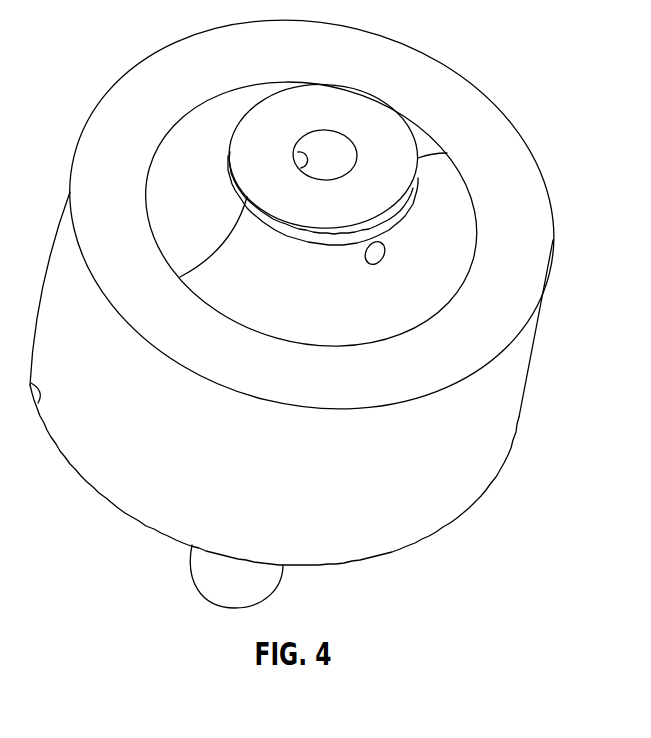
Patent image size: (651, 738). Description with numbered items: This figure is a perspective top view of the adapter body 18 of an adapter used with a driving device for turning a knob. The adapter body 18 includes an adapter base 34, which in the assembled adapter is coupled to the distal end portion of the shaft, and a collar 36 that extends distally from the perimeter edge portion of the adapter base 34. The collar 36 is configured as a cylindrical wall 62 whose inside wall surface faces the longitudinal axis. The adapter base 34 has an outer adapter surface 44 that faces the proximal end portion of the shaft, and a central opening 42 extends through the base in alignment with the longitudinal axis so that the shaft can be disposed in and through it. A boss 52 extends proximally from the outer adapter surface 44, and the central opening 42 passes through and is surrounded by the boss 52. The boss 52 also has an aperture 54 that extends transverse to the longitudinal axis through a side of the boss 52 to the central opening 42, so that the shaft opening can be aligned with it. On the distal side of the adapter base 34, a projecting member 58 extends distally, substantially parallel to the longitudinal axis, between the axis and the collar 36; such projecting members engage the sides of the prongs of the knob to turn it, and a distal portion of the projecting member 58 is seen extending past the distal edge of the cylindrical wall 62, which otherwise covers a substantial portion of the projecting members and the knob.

The adapter body 18 is at (542, 298).
The adapter base 34 is at (520, 187).
The collar 36 is at (500, 377).
The central opening 42 is at (333, 132).
The outer adapter surface 44 is at (528, 257).
The boss 52 is at (387, 133).
The aperture 54 is at (385, 259).
The projecting member 58 is at (217, 585).
The cylindrical wall 62 is at (110, 460).